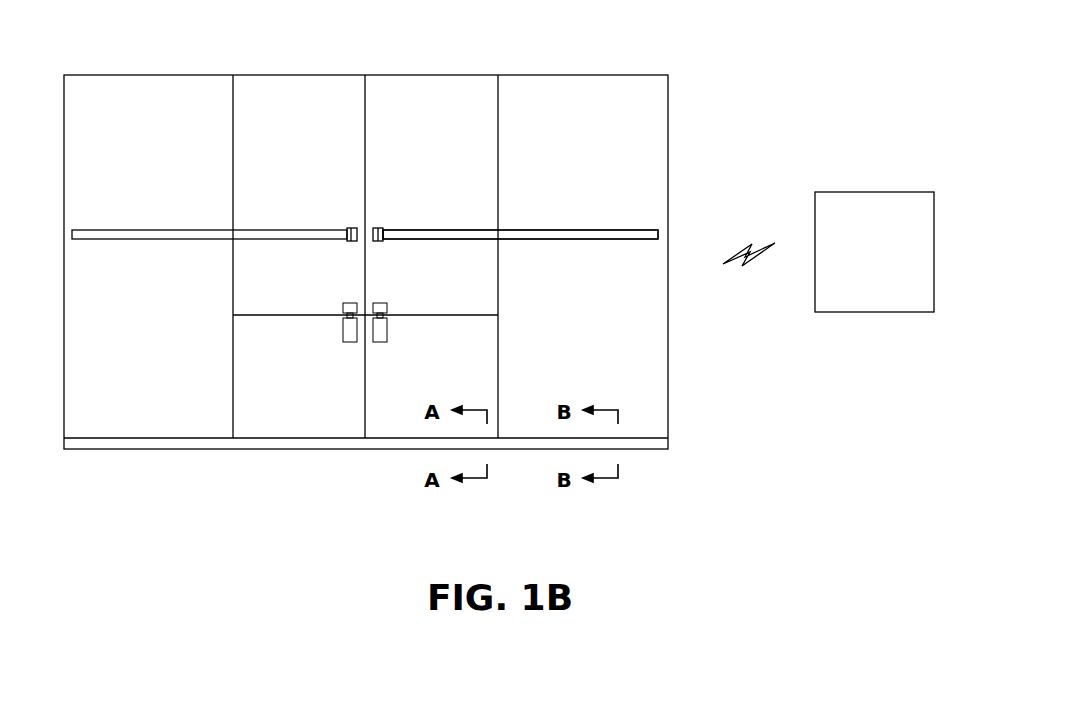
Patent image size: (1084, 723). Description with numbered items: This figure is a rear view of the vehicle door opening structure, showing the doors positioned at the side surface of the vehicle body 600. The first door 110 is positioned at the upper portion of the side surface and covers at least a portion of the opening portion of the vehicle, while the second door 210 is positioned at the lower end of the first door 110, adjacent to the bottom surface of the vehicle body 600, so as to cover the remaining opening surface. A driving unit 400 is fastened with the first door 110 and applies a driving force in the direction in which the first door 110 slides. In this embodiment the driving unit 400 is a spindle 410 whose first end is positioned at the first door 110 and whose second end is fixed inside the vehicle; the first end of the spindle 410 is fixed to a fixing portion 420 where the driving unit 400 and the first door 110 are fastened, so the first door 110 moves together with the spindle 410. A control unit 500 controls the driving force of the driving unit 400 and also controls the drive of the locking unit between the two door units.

The first door 110 is at (281, 92).
The second door 210 is at (312, 418).
The driving unit 400 is at (610, 210).
The spindle 410 is at (450, 232).
The fixing portion 420 is at (373, 226).
The control unit 500 is at (876, 192).
The vehicle body 600 is at (609, 88).